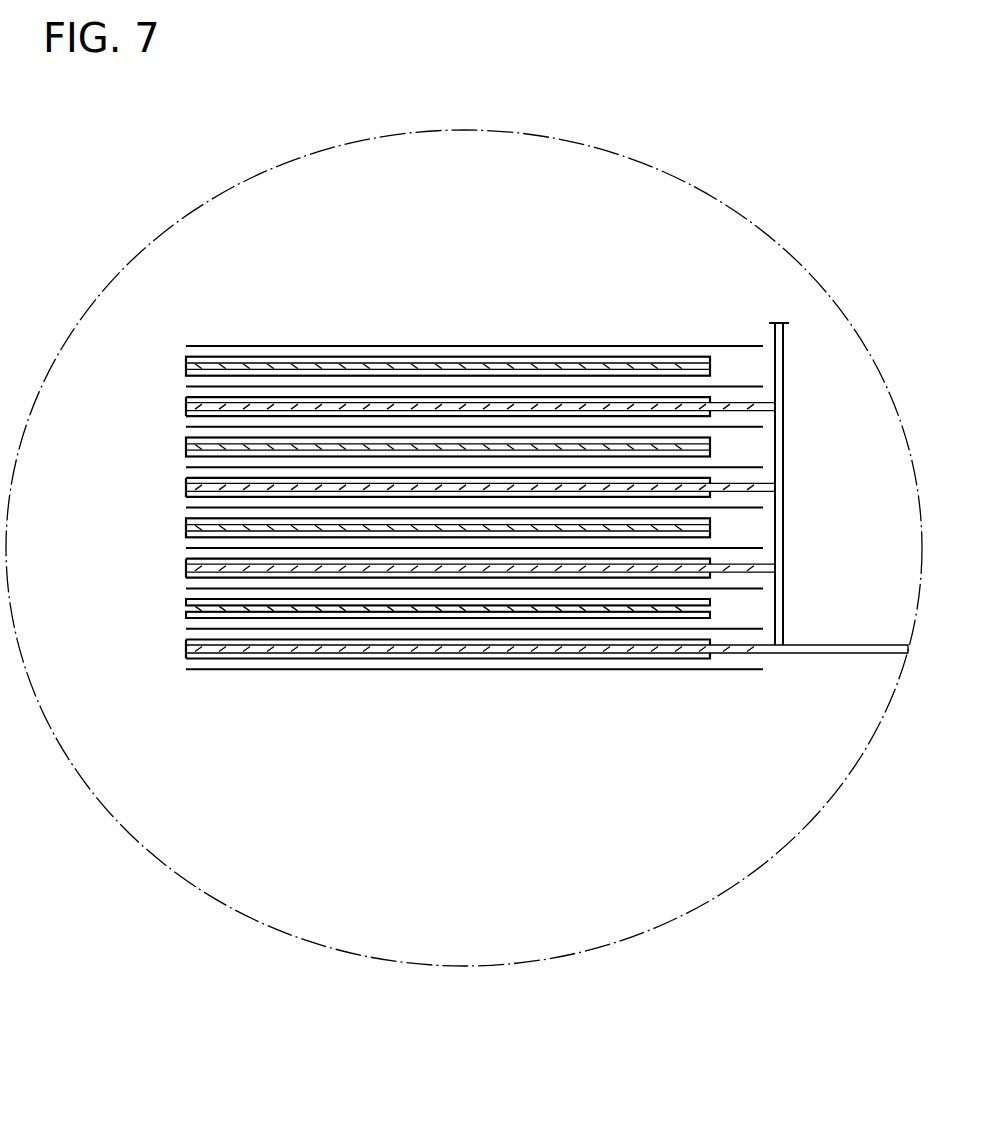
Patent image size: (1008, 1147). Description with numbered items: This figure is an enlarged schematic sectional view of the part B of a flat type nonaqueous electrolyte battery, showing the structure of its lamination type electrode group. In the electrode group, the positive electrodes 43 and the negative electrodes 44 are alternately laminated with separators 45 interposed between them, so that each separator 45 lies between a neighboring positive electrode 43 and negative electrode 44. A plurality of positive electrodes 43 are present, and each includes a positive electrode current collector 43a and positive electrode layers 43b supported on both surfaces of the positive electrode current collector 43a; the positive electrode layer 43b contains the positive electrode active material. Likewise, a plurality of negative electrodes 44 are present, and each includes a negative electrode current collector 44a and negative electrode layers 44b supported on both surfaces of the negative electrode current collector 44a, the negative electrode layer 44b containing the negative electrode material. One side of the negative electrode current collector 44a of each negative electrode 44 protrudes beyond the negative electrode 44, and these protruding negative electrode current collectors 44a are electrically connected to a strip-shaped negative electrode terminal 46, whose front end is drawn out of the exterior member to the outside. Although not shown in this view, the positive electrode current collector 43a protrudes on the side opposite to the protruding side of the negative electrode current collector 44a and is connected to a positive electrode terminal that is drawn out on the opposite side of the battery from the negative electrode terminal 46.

The positive electrode 43 is at (378, 513).
The positive electrode current collector 43a is at (186, 609).
The positive electrode layer 43b is at (186, 600).
The negative electrode 44 is at (474, 572).
The negative electrode current collector 44a is at (190, 650).
The negative electrode layer 44b is at (188, 642).
The separator 45 is at (553, 346).
The negative electrode terminal 46 is at (840, 653).
The part B is at (767, 864).